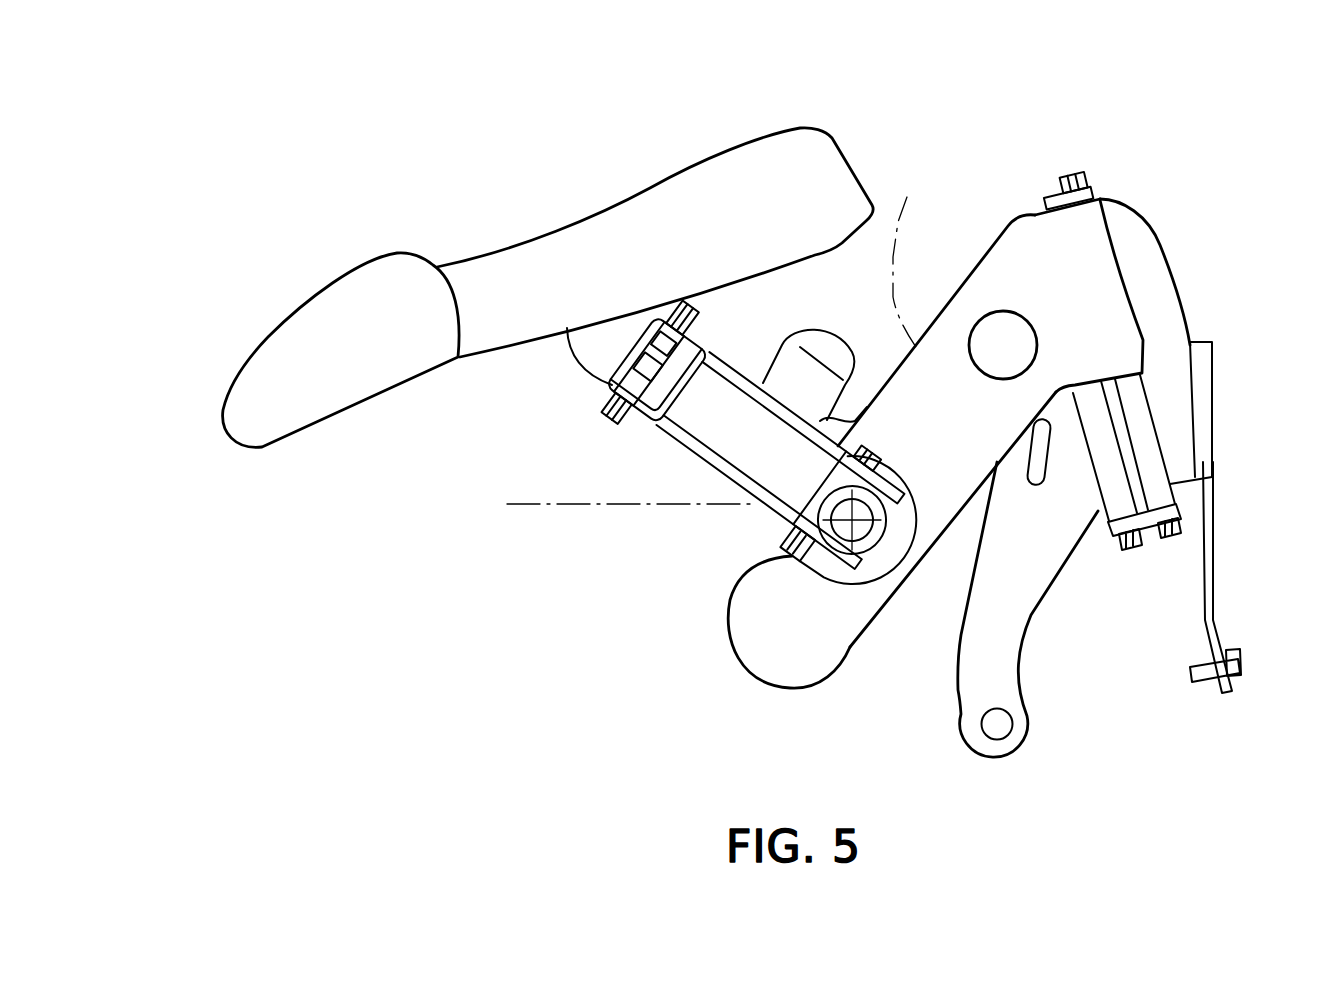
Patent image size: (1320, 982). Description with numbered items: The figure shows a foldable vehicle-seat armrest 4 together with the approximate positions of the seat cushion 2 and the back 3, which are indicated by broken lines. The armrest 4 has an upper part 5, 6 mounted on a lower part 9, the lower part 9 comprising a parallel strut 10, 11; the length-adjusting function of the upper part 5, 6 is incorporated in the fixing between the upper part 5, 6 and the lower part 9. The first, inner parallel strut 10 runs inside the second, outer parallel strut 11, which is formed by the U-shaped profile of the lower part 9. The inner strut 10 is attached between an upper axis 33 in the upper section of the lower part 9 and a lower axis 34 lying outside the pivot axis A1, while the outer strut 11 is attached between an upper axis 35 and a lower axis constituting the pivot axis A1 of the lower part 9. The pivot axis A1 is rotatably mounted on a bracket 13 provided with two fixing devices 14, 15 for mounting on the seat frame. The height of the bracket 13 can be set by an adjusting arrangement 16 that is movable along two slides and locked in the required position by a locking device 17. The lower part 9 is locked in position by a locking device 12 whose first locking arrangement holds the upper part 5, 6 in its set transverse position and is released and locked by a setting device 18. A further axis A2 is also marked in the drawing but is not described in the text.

The seat cushion 2 is at (577, 505).
The back 3 is at (903, 214).
The armrest 4 is at (436, 206).
The upper part 5 is at (657, 197).
The upper part 6 is at (300, 317).
The lower part 9 is at (732, 475).
The first parallel strut 10 is at (657, 417).
The second parallel strut 11 is at (585, 387).
The locking device 12 is at (889, 645).
The bracket 13 is at (967, 307).
The fixing device 14 is at (1013, 617).
The fixing device 15 is at (1210, 567).
The adjusting arrangement 16 is at (1153, 261).
The locking device 17 is at (993, 320).
The setting device 18 is at (830, 347).
The upper axis 33 is at (612, 395).
The lower axis 34 is at (775, 599).
The upper axis 35 is at (618, 406).
The pivot axis A1 is at (878, 443).
The second axis A2 is at (773, 517).